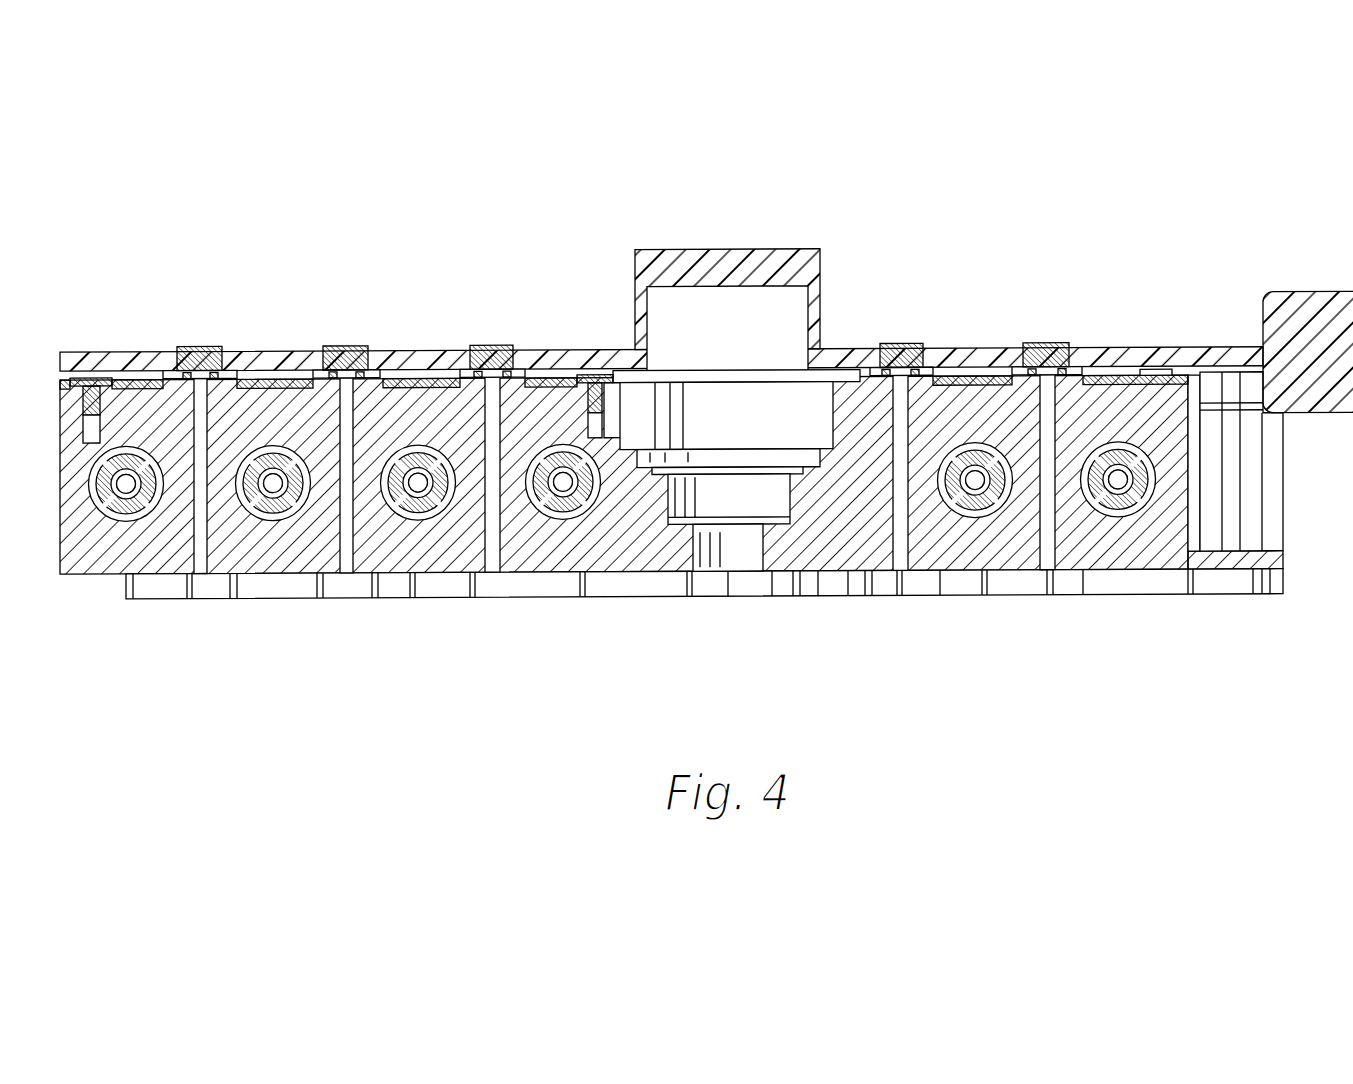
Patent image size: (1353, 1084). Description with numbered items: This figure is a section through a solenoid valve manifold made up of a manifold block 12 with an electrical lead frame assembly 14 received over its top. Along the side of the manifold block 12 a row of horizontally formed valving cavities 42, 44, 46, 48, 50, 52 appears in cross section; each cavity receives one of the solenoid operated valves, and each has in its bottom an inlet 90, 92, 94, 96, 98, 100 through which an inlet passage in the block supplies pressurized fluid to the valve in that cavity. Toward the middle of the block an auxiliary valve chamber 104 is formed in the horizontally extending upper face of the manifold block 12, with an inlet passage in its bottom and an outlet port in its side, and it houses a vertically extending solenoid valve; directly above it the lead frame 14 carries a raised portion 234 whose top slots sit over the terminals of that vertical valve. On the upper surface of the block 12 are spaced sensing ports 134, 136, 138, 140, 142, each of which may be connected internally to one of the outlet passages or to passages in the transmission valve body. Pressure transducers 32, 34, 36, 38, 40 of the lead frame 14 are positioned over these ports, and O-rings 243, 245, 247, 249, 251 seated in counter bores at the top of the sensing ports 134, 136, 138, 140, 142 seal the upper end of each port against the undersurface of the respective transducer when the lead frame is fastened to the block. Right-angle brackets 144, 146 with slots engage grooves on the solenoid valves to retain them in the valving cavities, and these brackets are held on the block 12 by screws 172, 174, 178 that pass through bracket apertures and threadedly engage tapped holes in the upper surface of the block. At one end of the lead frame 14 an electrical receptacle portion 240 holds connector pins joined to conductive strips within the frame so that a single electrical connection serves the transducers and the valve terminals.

The manifold block 12 is at (85, 577).
The electrical lead frame assembly 14 is at (120, 352).
The pressure transducer 32 is at (200, 350).
The pressure transducer 34 is at (345, 351).
The pressure transducer 36 is at (490, 352).
The pressure transducer 38 is at (900, 354).
The pressure transducer 40 is at (1045, 354).
The valving cavity 42 is at (125, 520).
The valving cavity 44 is at (283, 521).
The valving cavity 46 is at (428, 521).
The valving cavity 48 is at (573, 522).
The valving cavity 50 is at (985, 524).
The valving cavity 52 is at (1128, 525).
The inlet 90 is at (118, 490).
The inlet 92 is at (270, 491).
The inlet 94 is at (416, 491).
The inlet 96 is at (562, 492).
The inlet 98 is at (972, 494).
The inlet 100 is at (1116, 495).
The auxiliary valve chamber 104 is at (740, 508).
The sensing port 134 is at (200, 548).
The sensing port 136 is at (350, 549).
The sensing port 138 is at (495, 550).
The sensing port 140 is at (902, 550).
The sensing port 142 is at (1050, 550).
The bracket 144 is at (412, 354).
The bracket 146 is at (955, 384).
The screw 172 is at (92, 395).
The screw 174 is at (591, 380).
The screw 178 is at (1160, 380).
The raised portion 234 is at (730, 252).
The electrical receptacle portion 240 is at (1300, 300).
The O-ring 243 is at (178, 386).
The O-ring 245 is at (326, 387).
The O-ring 247 is at (476, 388).
The O-ring 249 is at (883, 390).
The O-ring 251 is at (1028, 390).